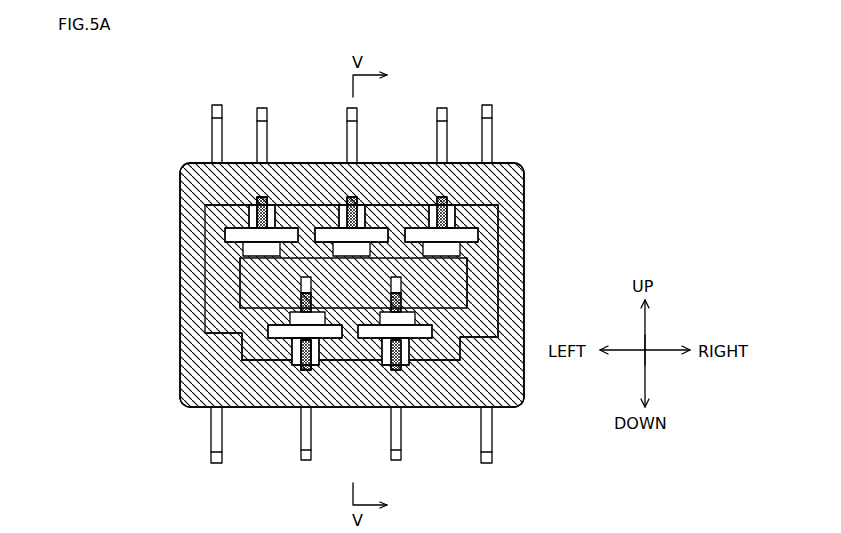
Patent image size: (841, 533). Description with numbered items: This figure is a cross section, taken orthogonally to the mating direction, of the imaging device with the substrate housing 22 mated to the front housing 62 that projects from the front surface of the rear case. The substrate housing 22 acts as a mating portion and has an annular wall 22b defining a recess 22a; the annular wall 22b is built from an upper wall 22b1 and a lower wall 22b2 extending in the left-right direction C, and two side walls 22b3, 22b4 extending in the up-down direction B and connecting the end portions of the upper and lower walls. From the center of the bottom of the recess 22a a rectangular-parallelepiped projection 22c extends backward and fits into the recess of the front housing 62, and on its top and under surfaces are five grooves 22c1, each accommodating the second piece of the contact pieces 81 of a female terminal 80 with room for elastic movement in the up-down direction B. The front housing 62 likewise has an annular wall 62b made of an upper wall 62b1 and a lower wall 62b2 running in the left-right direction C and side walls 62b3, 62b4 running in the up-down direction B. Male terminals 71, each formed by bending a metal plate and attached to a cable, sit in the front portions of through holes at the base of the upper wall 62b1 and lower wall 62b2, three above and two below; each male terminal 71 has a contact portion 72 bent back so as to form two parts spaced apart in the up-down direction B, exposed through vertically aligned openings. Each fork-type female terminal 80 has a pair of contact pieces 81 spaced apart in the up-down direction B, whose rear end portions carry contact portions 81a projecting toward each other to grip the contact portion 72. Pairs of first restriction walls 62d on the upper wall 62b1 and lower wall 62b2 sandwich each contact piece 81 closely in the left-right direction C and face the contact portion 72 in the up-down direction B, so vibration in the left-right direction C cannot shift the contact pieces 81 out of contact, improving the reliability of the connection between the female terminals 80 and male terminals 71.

The substrate housing 22 is at (134, 150).
The recess 22a is at (502, 320).
The annular wall 22b is at (527, 162).
The upper wall 22b1 is at (250, 163).
The lower wall 22b2 is at (242, 407).
The side wall 22b3 is at (178, 302).
The side wall 22b4 is at (516, 250).
The projection 22c is at (248, 270).
The groove 22c1 is at (245, 286).
The front housing 62 is at (500, 209).
The annular wall 62b is at (255, 205).
The upper wall 62b1 is at (421, 163).
The lower wall 62b2 is at (463, 343).
The side wall 62b3 is at (208, 322).
The side wall 62b4 is at (486, 296).
The first restriction wall 62d is at (249, 206).
The male terminal 71 is at (300, 215).
The contact portion 72 is at (351, 283).
The female terminal 80 is at (342, 90).
The contact piece 81 is at (232, 238).
The contact portion 81a is at (284, 283).
The up-down direction B is at (650, 365).
The left-right direction C is at (652, 349).